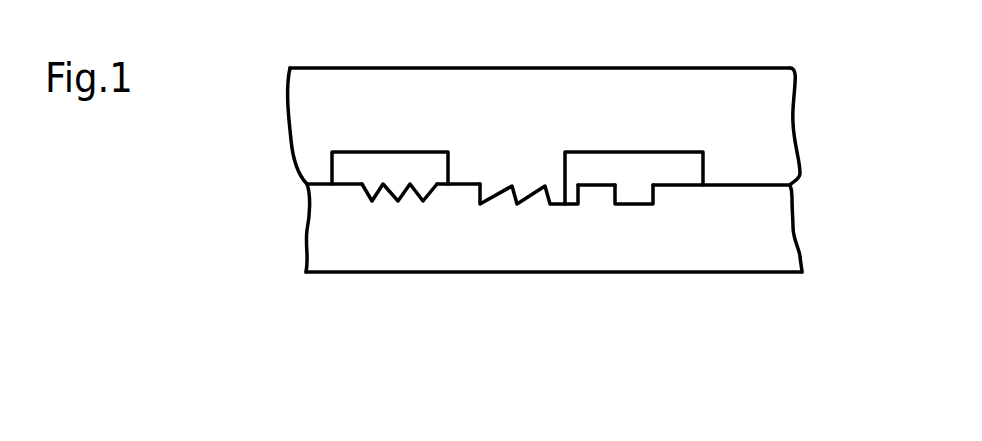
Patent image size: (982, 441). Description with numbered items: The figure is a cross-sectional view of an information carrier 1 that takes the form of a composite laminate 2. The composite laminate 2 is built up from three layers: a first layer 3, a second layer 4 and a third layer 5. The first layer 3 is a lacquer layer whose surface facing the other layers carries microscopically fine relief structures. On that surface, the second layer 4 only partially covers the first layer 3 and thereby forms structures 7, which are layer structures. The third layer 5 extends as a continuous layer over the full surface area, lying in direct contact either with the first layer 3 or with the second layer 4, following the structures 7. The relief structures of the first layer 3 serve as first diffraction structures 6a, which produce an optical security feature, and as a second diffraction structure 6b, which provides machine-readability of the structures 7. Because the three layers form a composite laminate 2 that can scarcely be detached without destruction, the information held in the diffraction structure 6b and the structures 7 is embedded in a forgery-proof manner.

The information carrier 1 is at (245, 123).
The composite laminate 2 is at (852, 73).
The first layer 3 is at (408, 260).
The second layer 4 is at (438, 187).
The third layer 5 is at (657, 90).
The first diffraction structures 6a is at (510, 172).
The second diffraction structure 6b is at (422, 172).
The structures 7 is at (407, 147).